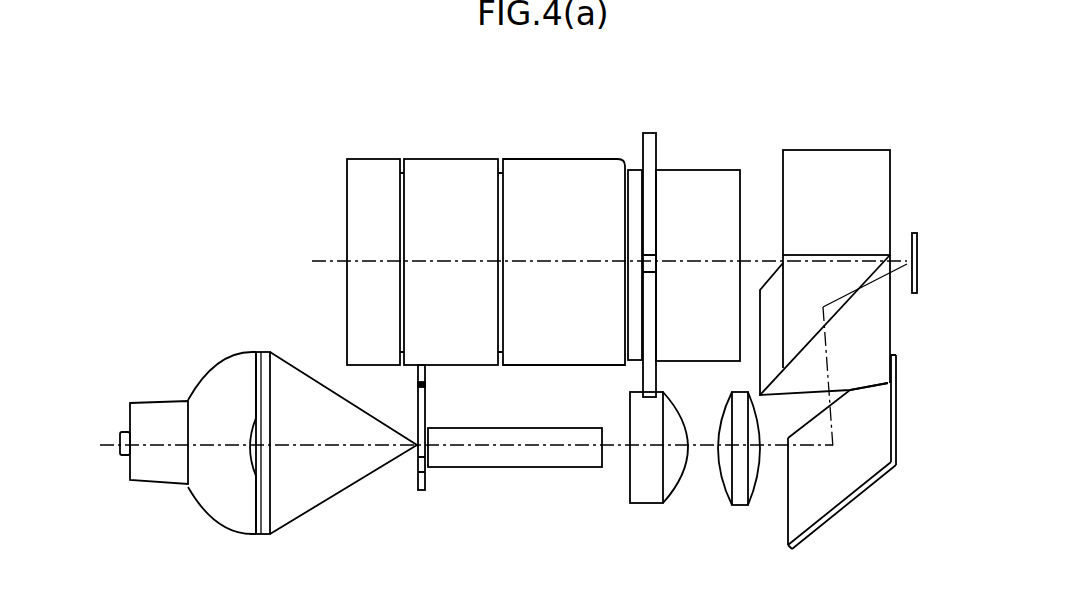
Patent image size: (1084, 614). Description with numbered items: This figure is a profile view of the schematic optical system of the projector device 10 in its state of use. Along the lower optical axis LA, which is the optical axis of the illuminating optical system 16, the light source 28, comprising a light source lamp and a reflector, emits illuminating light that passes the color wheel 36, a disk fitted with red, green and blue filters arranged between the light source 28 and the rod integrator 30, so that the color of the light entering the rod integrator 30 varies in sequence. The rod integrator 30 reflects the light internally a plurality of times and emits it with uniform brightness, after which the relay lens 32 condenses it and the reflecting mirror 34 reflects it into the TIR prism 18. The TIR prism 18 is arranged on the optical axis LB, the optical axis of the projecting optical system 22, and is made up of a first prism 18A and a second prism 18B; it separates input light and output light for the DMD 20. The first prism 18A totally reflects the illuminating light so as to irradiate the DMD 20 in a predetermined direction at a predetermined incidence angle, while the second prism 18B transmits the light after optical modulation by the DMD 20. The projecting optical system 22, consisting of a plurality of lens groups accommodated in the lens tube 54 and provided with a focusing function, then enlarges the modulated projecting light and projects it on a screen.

The projector device 10 is at (267, 179).
The illuminating optical system 16 is at (543, 555).
The TIR prism 18 is at (843, 143).
The first prism 18A is at (880, 323).
The second prism 18B is at (870, 190).
The DMD 20 is at (920, 253).
The projecting optical system 22 is at (547, 146).
The light source 28 is at (228, 508).
The rod integrator 30 is at (567, 457).
The relay lens 32 is at (652, 488).
The reflecting mirror 34 is at (805, 537).
The color wheel 36 is at (425, 480).
The lens tube 54 is at (595, 188).
The optical axis LA is at (360, 445).
The optical axis LB is at (390, 262).